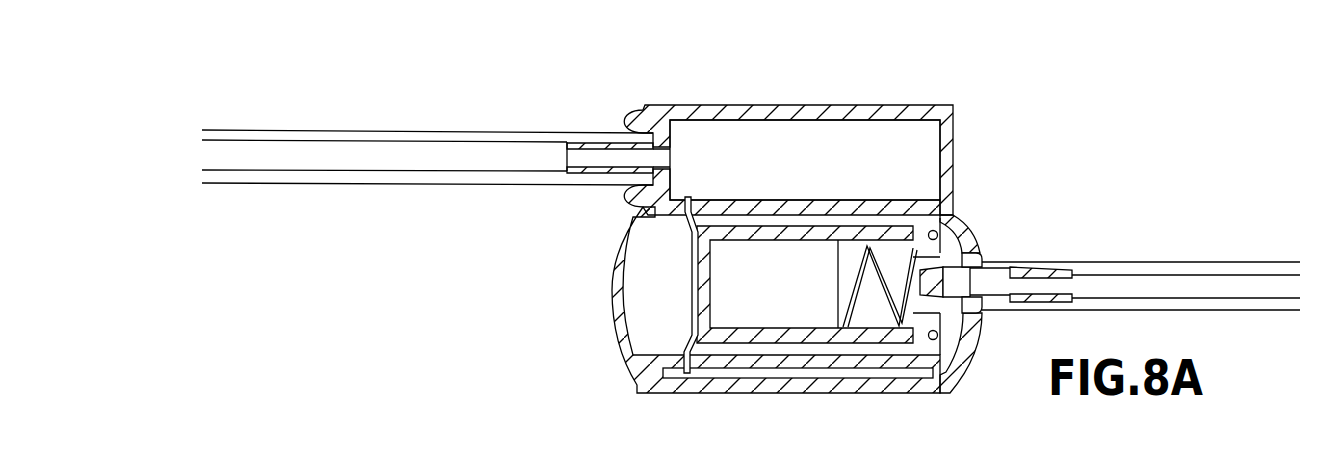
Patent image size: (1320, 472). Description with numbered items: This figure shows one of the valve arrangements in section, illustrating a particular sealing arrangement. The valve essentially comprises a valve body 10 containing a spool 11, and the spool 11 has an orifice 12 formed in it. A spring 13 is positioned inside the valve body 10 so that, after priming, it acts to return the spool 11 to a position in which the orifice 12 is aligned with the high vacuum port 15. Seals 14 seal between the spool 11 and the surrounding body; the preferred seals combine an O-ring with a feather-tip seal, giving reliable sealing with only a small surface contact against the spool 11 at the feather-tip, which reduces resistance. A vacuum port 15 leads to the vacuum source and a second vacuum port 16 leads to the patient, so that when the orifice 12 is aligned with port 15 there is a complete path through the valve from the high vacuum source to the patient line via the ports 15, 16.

The valve body 10 is at (705, 367).
The spool 11 is at (800, 335).
The orifice 12 is at (808, 202).
The spring 13 is at (865, 305).
The seals 14 is at (955, 205).
The vacuum port 15 is at (230, 130).
The vacuum port 16 is at (1198, 263).